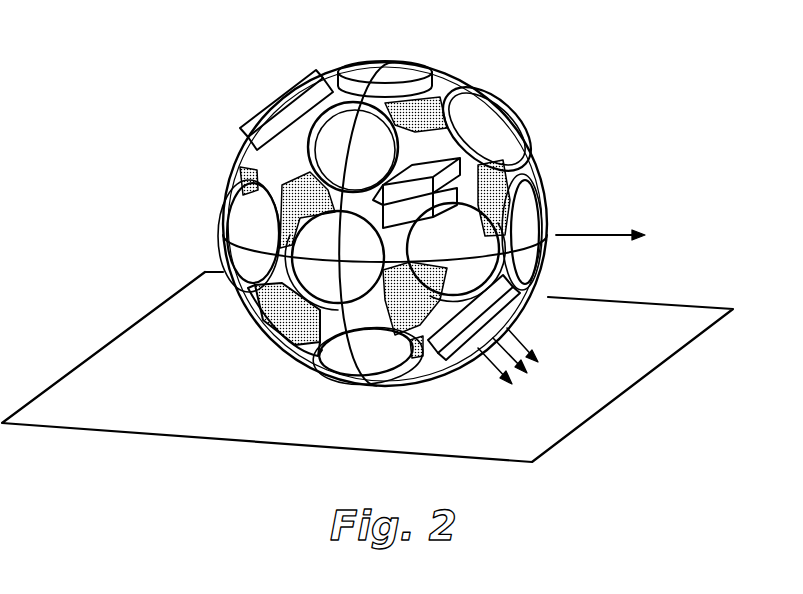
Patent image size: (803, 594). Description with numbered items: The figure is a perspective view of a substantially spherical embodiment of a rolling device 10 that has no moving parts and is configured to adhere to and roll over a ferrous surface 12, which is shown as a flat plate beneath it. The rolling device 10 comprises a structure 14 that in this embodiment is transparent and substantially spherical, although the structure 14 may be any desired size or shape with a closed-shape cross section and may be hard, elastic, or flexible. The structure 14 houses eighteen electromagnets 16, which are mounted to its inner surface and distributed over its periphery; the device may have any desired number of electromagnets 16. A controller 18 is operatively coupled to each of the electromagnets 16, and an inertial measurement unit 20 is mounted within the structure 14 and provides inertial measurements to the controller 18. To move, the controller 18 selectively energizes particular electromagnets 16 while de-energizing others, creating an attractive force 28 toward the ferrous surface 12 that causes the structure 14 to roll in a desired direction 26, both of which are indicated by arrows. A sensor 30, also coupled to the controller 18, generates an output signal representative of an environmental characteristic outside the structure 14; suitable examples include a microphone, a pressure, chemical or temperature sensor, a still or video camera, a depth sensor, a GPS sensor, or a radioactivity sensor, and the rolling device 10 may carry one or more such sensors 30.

The rolling device 10 is at (114, 62).
The ferrous surface 12 is at (127, 358).
The structure 14 is at (456, 80).
The electromagnets 16 is at (320, 366).
The controller 18 is at (410, 280).
The inertial measurement unit 20 is at (455, 172).
The direction 26 is at (597, 237).
The attractive force 28 is at (520, 345).
The sensor 30 is at (400, 148).